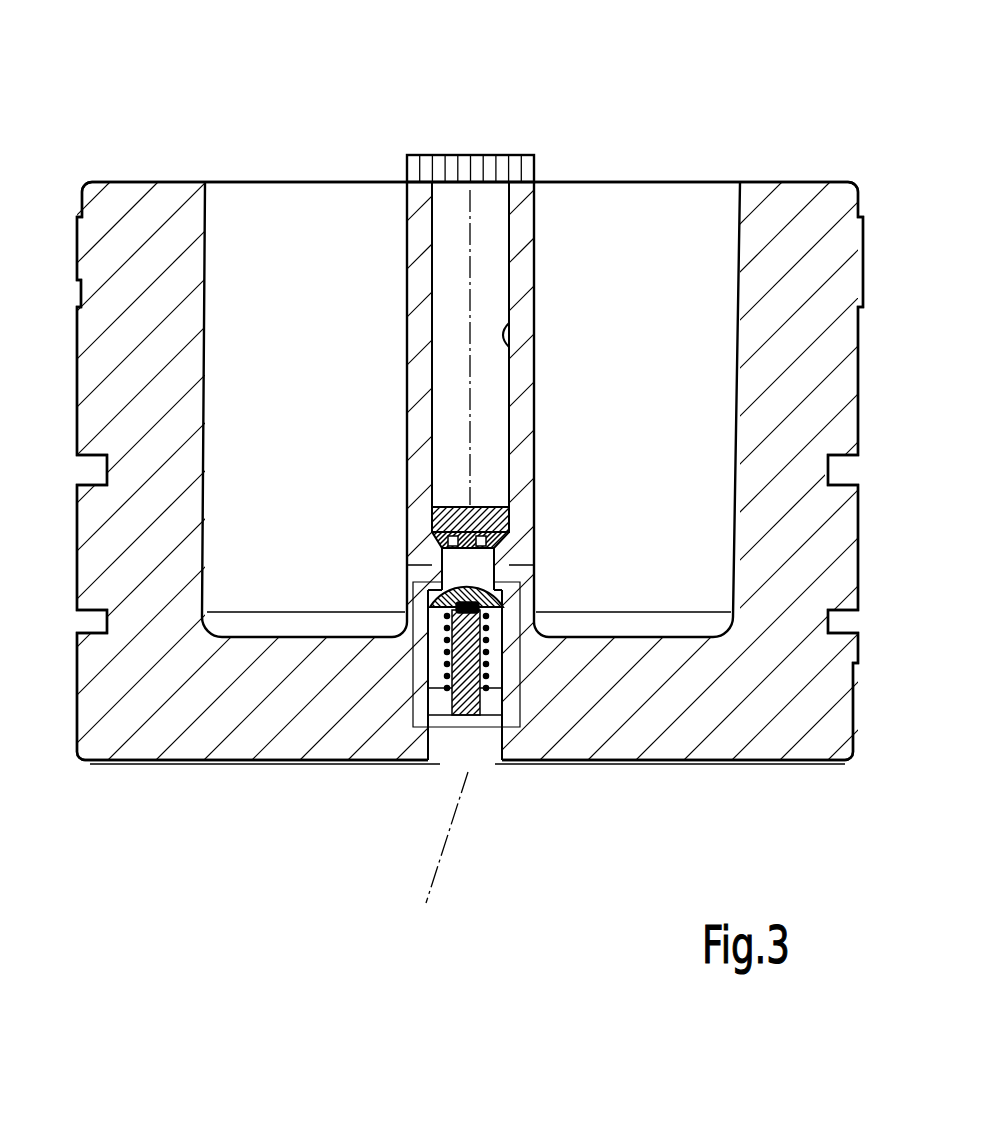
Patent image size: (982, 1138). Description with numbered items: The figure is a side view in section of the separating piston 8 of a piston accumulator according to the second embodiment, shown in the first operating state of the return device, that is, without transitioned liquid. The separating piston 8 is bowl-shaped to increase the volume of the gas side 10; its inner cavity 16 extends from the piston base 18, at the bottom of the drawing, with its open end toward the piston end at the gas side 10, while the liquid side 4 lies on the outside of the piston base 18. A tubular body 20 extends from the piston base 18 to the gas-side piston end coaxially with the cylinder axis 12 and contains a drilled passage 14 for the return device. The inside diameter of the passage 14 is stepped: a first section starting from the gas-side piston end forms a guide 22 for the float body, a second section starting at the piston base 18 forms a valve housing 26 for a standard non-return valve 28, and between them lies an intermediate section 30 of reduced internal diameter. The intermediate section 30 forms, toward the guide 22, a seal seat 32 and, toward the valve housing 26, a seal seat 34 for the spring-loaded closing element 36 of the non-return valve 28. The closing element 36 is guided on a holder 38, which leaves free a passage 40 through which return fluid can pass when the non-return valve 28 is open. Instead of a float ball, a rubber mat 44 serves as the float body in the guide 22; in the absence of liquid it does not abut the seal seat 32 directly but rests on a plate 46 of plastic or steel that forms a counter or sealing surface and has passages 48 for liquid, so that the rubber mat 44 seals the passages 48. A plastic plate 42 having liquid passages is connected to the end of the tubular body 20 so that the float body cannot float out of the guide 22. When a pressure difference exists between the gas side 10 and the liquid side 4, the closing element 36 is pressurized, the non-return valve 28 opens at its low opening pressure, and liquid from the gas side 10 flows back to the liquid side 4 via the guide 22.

The liquid side 4 is at (170, 762).
The separating piston 8 is at (118, 377).
The gas side 10 is at (150, 182).
The cylinder axis 12 is at (442, 851).
The passage 14 is at (447, 300).
The inner cavity 16 is at (300, 240).
The piston base 18 is at (245, 708).
The tubular body 20 is at (423, 365).
The guide 22 is at (533, 363).
The valve housing 26 is at (512, 685).
The non-return valve 28 is at (424, 652).
The intermediate section 30 is at (530, 565).
The seal seat 32 is at (437, 542).
The seal seat 34 is at (500, 597).
The closing element 36 is at (510, 655).
The holder 38 is at (448, 700).
The passage 40 is at (478, 720).
The plastic plate 42 is at (515, 160).
The rubber mat 44 is at (448, 507).
The plate 46 is at (477, 503).
The passages 48 is at (435, 566).